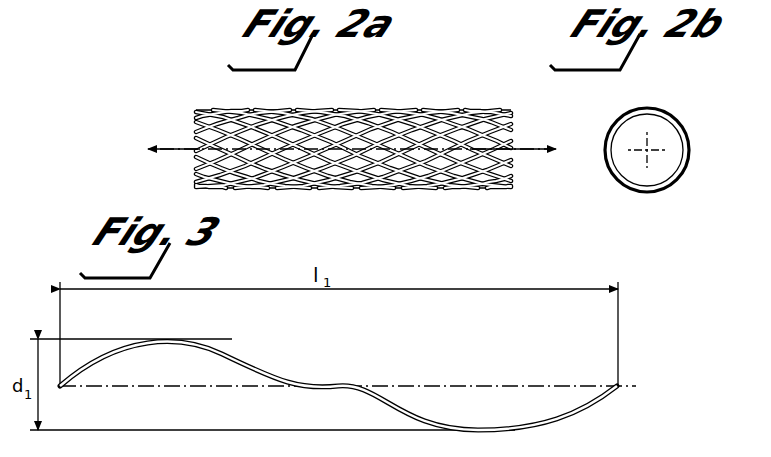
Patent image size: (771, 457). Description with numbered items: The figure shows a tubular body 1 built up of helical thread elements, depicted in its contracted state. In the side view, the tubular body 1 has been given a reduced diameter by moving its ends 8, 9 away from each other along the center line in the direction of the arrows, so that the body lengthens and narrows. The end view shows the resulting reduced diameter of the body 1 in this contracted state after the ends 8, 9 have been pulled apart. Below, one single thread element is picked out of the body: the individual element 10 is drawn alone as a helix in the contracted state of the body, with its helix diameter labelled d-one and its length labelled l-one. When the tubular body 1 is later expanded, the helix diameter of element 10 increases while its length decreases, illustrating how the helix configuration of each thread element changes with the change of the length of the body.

In FIG. 2A, the tubular body 1 is at (282, 186).
In FIG. 2A, the end of the tubular body 8 is at (167, 146).
In FIG. 2A, the end of the tubular body 9 is at (540, 146).
In FIG. 2A, the individual thread element 10 is at (348, 108).
In FIG. 3, the individual thread element 10 is at (578, 412).